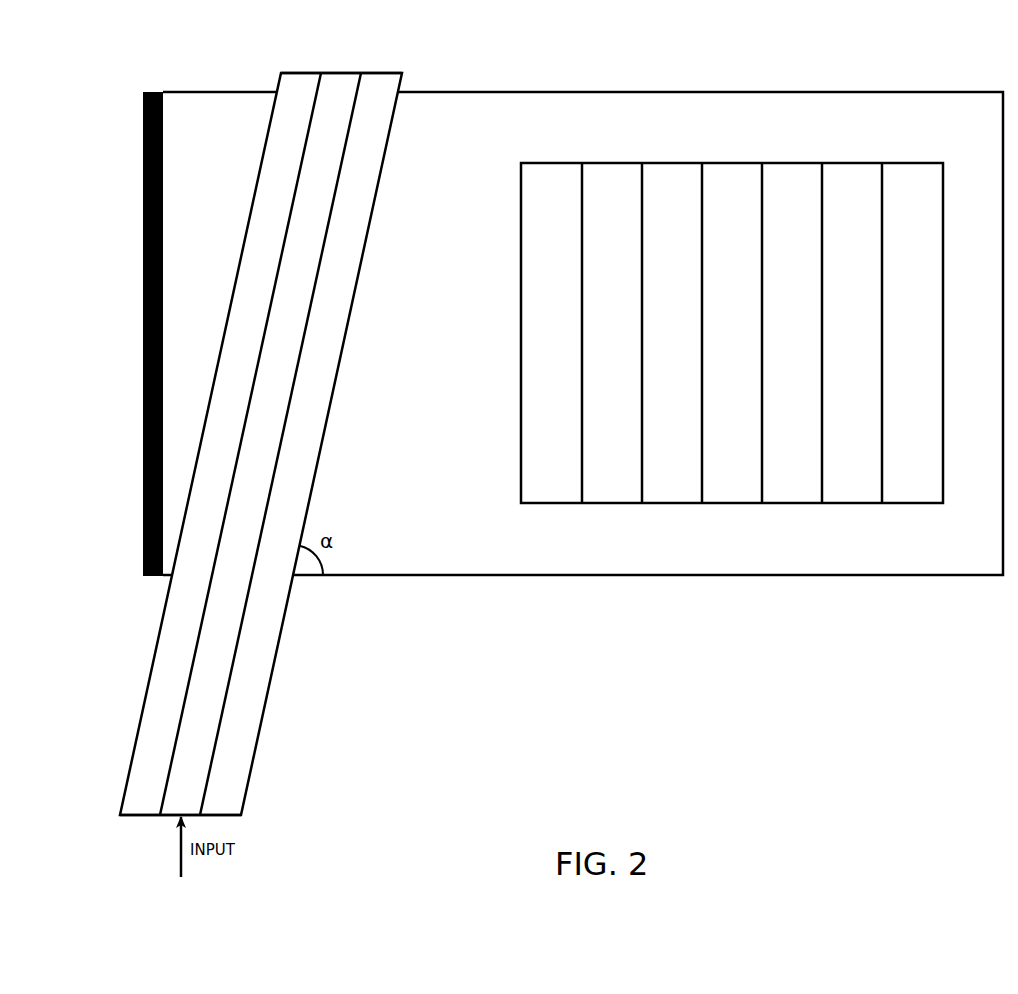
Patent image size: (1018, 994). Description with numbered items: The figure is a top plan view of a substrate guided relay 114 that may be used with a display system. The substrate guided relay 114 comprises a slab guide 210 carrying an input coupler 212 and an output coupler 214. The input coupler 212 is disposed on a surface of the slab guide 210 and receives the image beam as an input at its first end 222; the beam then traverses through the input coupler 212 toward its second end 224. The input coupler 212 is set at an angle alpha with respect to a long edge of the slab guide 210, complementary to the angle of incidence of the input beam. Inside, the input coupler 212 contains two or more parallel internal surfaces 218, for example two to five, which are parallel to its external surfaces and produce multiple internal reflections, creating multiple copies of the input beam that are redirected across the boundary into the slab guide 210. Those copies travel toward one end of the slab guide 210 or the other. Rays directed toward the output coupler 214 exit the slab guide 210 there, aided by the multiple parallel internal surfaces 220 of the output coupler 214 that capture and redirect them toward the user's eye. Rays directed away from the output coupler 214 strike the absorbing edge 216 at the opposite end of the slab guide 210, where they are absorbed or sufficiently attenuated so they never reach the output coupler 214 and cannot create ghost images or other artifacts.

The substrate guided relay 114 is at (914, 745).
The slab guide 210 is at (943, 575).
The input coupler 212 is at (257, 753).
The output coupler 214 is at (521, 183).
The absorbing edge 216 is at (143, 133).
The parallel internal surfaces 218 is at (252, 624).
The parallel internal surfaces 220 is at (563, 283).
The first end 222 is at (140, 815).
The second end 224 is at (380, 73).